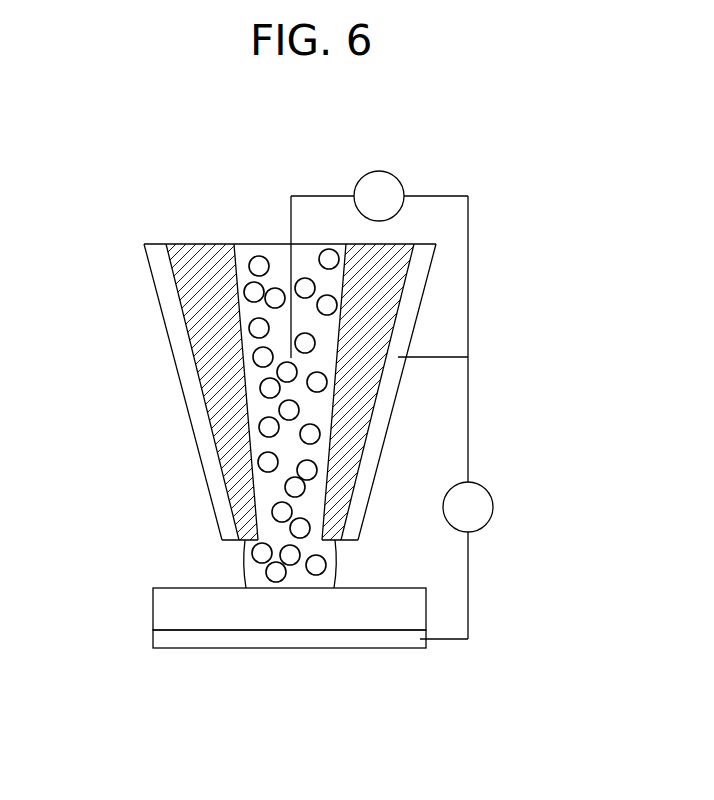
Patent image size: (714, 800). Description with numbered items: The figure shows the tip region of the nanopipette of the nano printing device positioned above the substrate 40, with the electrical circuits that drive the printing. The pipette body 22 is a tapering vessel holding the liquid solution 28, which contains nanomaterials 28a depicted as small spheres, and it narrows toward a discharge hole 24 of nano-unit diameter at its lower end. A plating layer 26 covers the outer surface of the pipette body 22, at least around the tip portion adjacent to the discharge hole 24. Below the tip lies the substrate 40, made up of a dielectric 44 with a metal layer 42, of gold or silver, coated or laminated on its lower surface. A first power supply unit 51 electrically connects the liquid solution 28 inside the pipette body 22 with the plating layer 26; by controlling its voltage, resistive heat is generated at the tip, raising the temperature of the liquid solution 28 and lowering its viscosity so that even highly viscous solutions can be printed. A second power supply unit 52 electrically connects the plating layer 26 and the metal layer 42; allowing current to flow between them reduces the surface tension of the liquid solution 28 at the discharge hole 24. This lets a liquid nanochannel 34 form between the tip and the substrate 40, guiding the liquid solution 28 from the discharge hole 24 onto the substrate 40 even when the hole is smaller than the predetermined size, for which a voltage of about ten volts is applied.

The pipette body 22 is at (195, 297).
The plating layer 26 is at (185, 362).
The liquid solution 28 is at (273, 255).
The nanomaterials 28a is at (258, 262).
The discharge hole 24 is at (258, 537).
The liquid nanochannel 34 is at (232, 567).
The substrate 40 is at (226, 620).
The metal layer 42 is at (153, 640).
The dielectric 44 is at (153, 605).
The first power supply unit 51 is at (380, 172).
The second power supply unit 52 is at (493, 503).